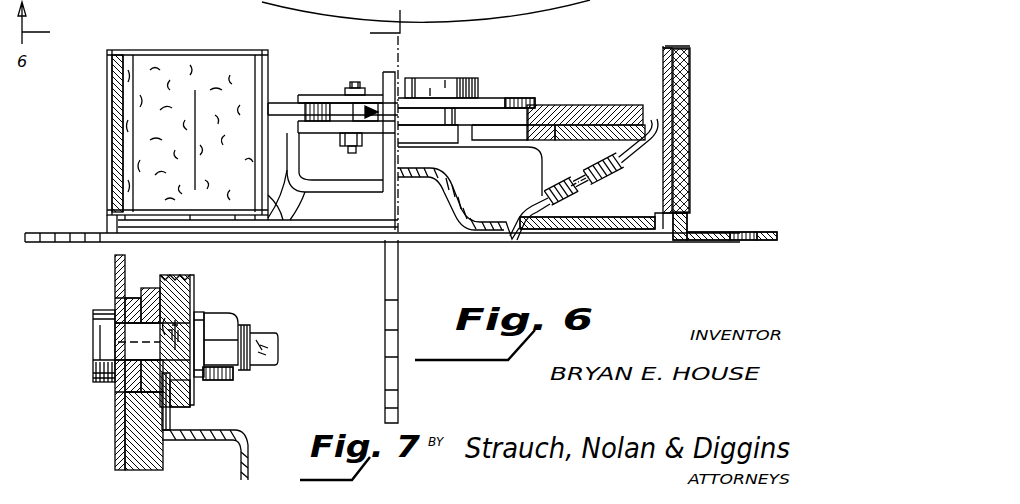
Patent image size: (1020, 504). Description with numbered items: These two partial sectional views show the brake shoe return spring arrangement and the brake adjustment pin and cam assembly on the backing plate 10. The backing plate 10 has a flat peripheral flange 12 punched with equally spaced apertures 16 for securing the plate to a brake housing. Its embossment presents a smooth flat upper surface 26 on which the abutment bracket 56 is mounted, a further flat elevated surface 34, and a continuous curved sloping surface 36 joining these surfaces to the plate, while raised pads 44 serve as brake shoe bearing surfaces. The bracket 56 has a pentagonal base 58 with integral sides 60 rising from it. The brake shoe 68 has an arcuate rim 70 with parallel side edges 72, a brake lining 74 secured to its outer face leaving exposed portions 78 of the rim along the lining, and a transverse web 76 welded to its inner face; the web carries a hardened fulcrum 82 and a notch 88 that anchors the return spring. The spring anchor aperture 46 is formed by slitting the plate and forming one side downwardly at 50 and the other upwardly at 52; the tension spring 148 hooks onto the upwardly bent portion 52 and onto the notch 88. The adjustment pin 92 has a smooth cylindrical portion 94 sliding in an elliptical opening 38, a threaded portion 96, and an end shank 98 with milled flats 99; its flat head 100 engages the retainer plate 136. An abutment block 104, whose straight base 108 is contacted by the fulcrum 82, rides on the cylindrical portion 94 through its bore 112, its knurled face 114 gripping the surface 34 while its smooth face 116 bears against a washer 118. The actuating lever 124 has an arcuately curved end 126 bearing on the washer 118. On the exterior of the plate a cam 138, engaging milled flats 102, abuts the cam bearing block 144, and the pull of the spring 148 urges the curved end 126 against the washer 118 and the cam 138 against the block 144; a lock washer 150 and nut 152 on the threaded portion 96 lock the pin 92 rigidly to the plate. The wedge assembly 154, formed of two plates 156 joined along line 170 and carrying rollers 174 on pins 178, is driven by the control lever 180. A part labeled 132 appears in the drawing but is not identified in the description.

In FIG. 6, the backing plate 10 is at (627, 257).
In FIG. 7, the backing plate 10 is at (250, 462).
In FIG. 6, the flat peripheral flange 12 is at (528, 0).
In FIG. 6, the apertures 16 is at (760, 244).
In FIG. 6, the upper surface 26 is at (317, 200).
In FIG. 6, the elevated surface 34 is at (428, 140).
In FIG. 6, the curved sloping surface 36 is at (518, 182).
In FIG. 7, the elliptical openings 38 is at (118, 360).
In FIG. 6, the raised pads 44 is at (662, 242).
In FIG. 6, the brake spring anchor apertures 46 is at (532, 243).
In FIG. 6, the downwardly formed side 50 is at (512, 243).
In FIG. 6, the upwardly bent portion 52 is at (556, 208).
In FIG. 6, the abutment bracket 56 is at (321, 172).
In FIG. 6, the base 58 is at (354, 187).
In FIG. 6, the bracket sides 60 is at (292, 150).
In FIG. 6, the brake shoe 68 is at (712, 124).
In FIG. 6, the rim 70 is at (664, 70).
In FIG. 6, the side edges 72 is at (176, 50).
In FIG. 6, the brake lining 74 is at (118, 134).
In FIG. 6, the web 76 is at (582, 143).
In FIG. 7, the web 76 is at (163, 463).
In FIG. 6, the exposed portion 78 is at (690, 48).
In FIG. 7, the fulcrum 82 is at (145, 400).
In FIG. 6, the notch 88 is at (640, 124).
In FIG. 7, the brake adjustment pin 92 is at (72, 338).
In FIG. 7, the cylindrical portion 94 is at (150, 357).
In FIG. 7, the threaded portion 96 is at (240, 328).
In FIG. 7, the end shank 98 is at (282, 340).
In FIG. 7, the milled flats 99 is at (250, 368).
In FIG. 6, the head 100 is at (476, 70).
In FIG. 7, the head 100 is at (96, 372).
In FIG. 7, the milled flats 102 is at (178, 318).
In FIG. 7, the brake shoe abutment block 104 is at (148, 288).
In FIG. 7, the base 108 is at (176, 412).
In FIG. 7, the bore 112 is at (176, 360).
In FIG. 7, the knurled face 114 is at (194, 275).
In FIG. 7, the smooth face 116 is at (116, 302).
In FIG. 7, the washers 118 is at (128, 295).
In FIG. 6, the brake shoe actuating lever 124 is at (282, 103).
In FIG. 7, the brake shoe actuating lever 124 is at (122, 466).
In FIG. 7, the arcuately curved edge 126 is at (128, 388).
In FIG. 6, the spacer 132 is at (545, 125).
In FIG. 6, the retainer plate 136 is at (498, 98).
In FIG. 7, the retainer plate 136 is at (118, 422).
In FIG. 7, the cam 138 is at (205, 412).
In FIG. 7, the cam bearing block 144 is at (190, 277).
In FIG. 6, the tension spring 148 is at (615, 177).
In FIG. 7, the lock washer 150 is at (198, 381).
In FIG. 7, the nut 152 is at (234, 380).
In FIG. 6, the actuating wedge assembly 154 is at (338, 88).
In FIG. 6, the plates 156 is at (306, 120).
In FIG. 6, the line 170 is at (400, 95).
In FIG. 6, the rollers 174 is at (368, 125).
In FIG. 6, the pins 178 is at (340, 143).
In FIG. 6, the control lever 180 is at (400, 297).